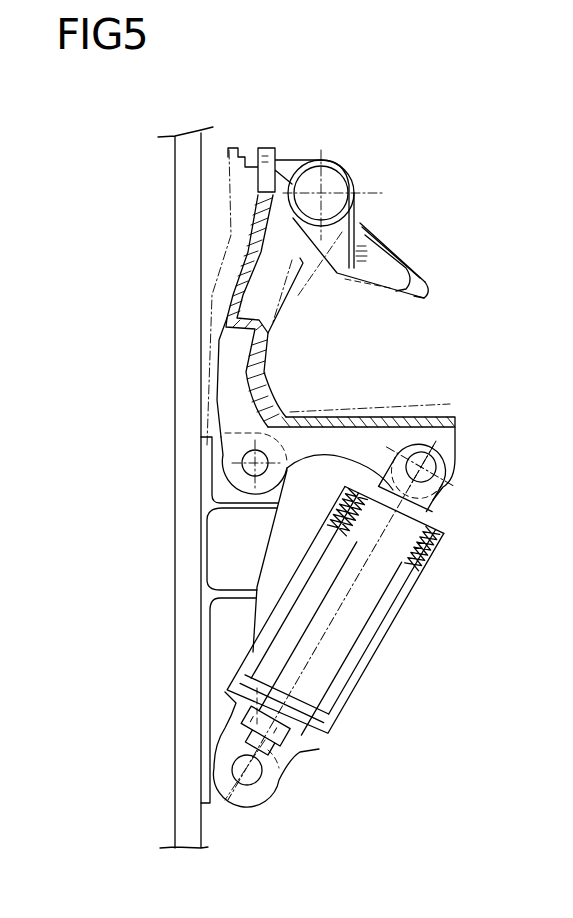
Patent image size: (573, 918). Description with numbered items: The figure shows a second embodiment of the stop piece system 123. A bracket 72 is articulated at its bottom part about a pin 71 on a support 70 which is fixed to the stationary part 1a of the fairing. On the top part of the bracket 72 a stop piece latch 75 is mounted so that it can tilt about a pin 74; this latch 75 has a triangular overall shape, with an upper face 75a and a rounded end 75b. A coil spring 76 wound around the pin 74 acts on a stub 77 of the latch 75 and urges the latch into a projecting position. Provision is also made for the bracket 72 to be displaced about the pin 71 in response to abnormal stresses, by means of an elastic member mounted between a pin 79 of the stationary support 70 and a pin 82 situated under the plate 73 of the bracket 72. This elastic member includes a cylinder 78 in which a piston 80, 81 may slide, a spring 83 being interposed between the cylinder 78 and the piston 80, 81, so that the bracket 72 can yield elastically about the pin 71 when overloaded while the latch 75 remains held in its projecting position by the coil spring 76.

The stationary part of the fairing 1a is at (187, 257).
The support 70 is at (203, 648).
The pin 71 is at (250, 468).
The bracket 72 is at (232, 366).
The plate 73 is at (447, 404).
The pin 74 is at (318, 194).
The stop piece latch 75 is at (397, 257).
The upper face of hook 75a is at (372, 243).
The end of the latch 75b is at (424, 299).
The coil spring 76 is at (350, 170).
The stub 77 is at (400, 266).
The cylinder 78 is at (375, 660).
The pin 79 is at (283, 777).
The piston 80 is at (320, 713).
The piston 81 is at (363, 614).
The pin 82 is at (447, 460).
The spring 83 is at (442, 528).
The stop piece system 123 is at (335, 157).